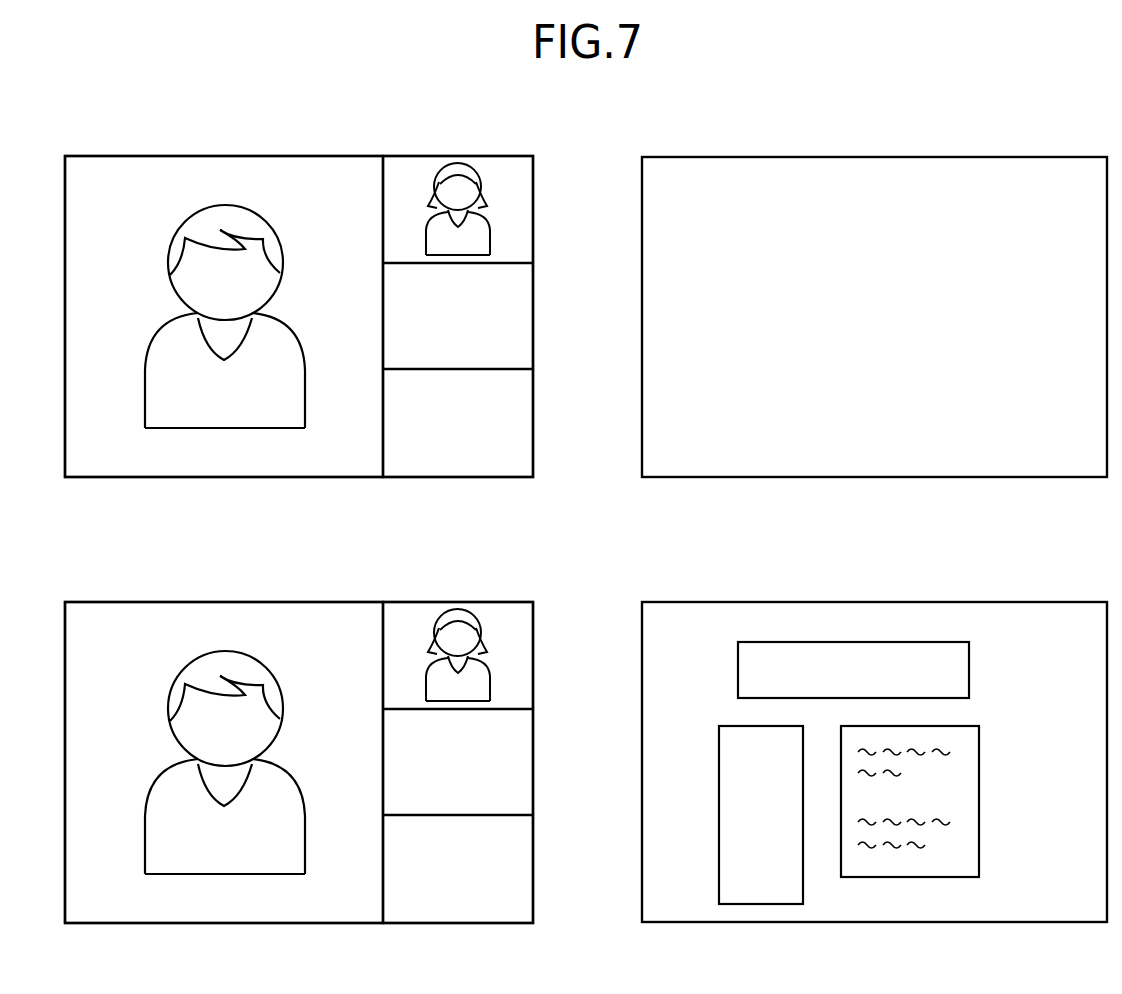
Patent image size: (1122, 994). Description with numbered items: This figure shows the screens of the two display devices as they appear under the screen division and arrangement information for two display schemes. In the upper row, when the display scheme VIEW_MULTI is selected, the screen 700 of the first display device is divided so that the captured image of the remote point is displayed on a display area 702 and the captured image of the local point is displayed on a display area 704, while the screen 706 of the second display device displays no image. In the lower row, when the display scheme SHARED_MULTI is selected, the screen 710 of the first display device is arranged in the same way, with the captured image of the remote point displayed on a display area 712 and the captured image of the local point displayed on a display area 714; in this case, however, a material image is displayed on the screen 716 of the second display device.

The screen 700 is at (305, 143).
The display area 702 is at (204, 172).
The display area 704 is at (497, 172).
The screen 706 is at (882, 143).
The screen 710 is at (305, 589).
The display area 712 is at (204, 618).
The display area 714 is at (497, 618).
The screen 716 is at (882, 589).